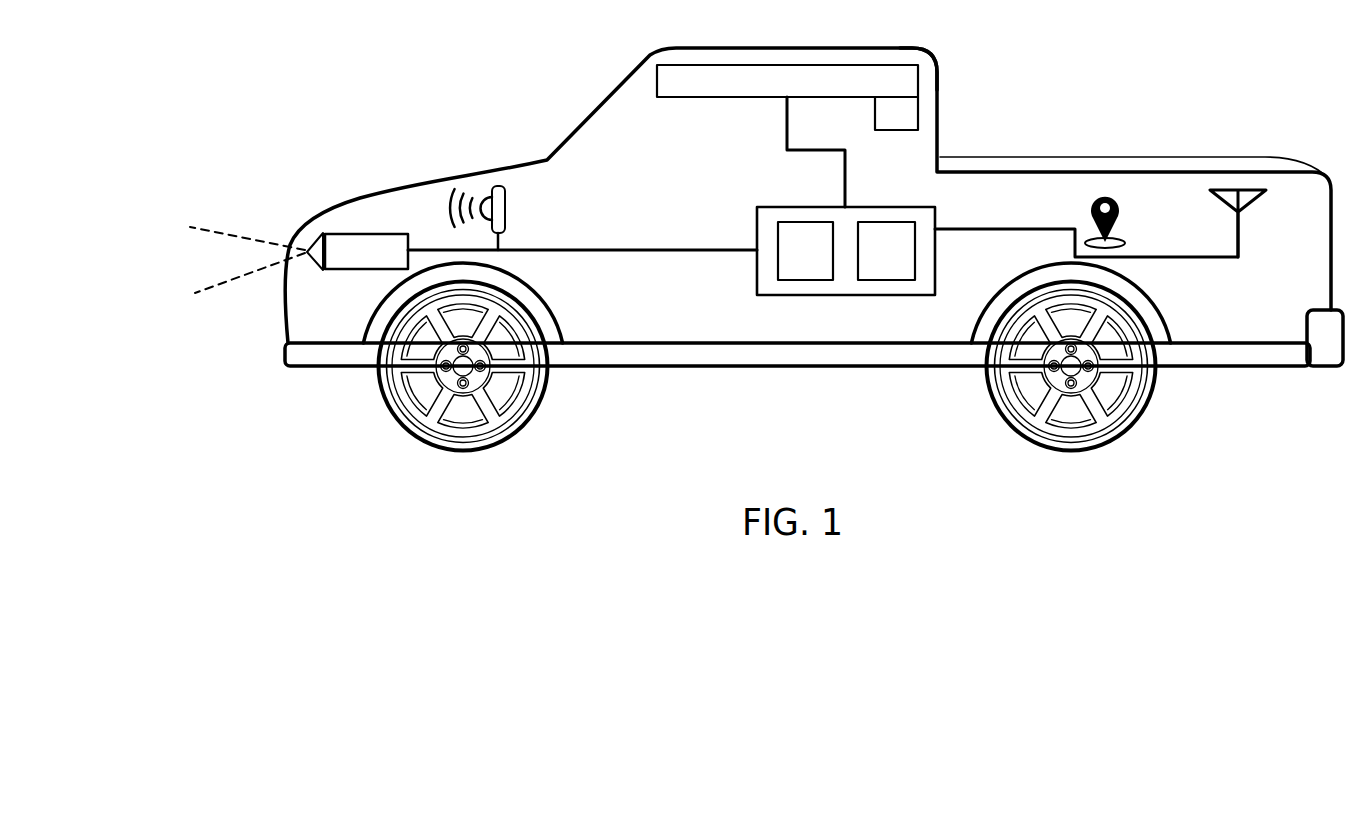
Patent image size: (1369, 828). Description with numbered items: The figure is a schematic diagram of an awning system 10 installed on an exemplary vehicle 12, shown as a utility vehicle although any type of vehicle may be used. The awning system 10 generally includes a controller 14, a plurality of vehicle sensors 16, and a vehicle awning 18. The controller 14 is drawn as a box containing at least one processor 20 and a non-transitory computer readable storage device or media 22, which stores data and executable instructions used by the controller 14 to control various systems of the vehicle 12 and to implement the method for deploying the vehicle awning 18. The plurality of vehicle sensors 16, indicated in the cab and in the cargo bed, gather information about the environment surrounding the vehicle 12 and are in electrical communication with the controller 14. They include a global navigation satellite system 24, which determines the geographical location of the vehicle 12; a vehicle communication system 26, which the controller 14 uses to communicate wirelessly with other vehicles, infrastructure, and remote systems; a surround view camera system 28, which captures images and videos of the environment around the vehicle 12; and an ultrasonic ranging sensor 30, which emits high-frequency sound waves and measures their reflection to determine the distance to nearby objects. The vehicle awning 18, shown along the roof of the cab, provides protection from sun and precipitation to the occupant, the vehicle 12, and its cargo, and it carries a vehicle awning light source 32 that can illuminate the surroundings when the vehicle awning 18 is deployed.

The awning system 10 is at (570, 117).
The vehicle 12 is at (935, 48).
The controller 14 is at (935, 258).
The plurality of vehicle sensors 16 is at (580, 174).
The vehicle awning 18 is at (801, 93).
The processor 20 is at (819, 264).
The non-transitory computer readable storage device or media 22 is at (900, 264).
The global navigation satellite system 24 is at (1120, 212).
The vehicle communication system 26 is at (1243, 213).
The surround view camera system 28 is at (380, 266).
The ultrasonic ranging sensor 30 is at (505, 216).
The vehicle awning light source 32 is at (910, 124).